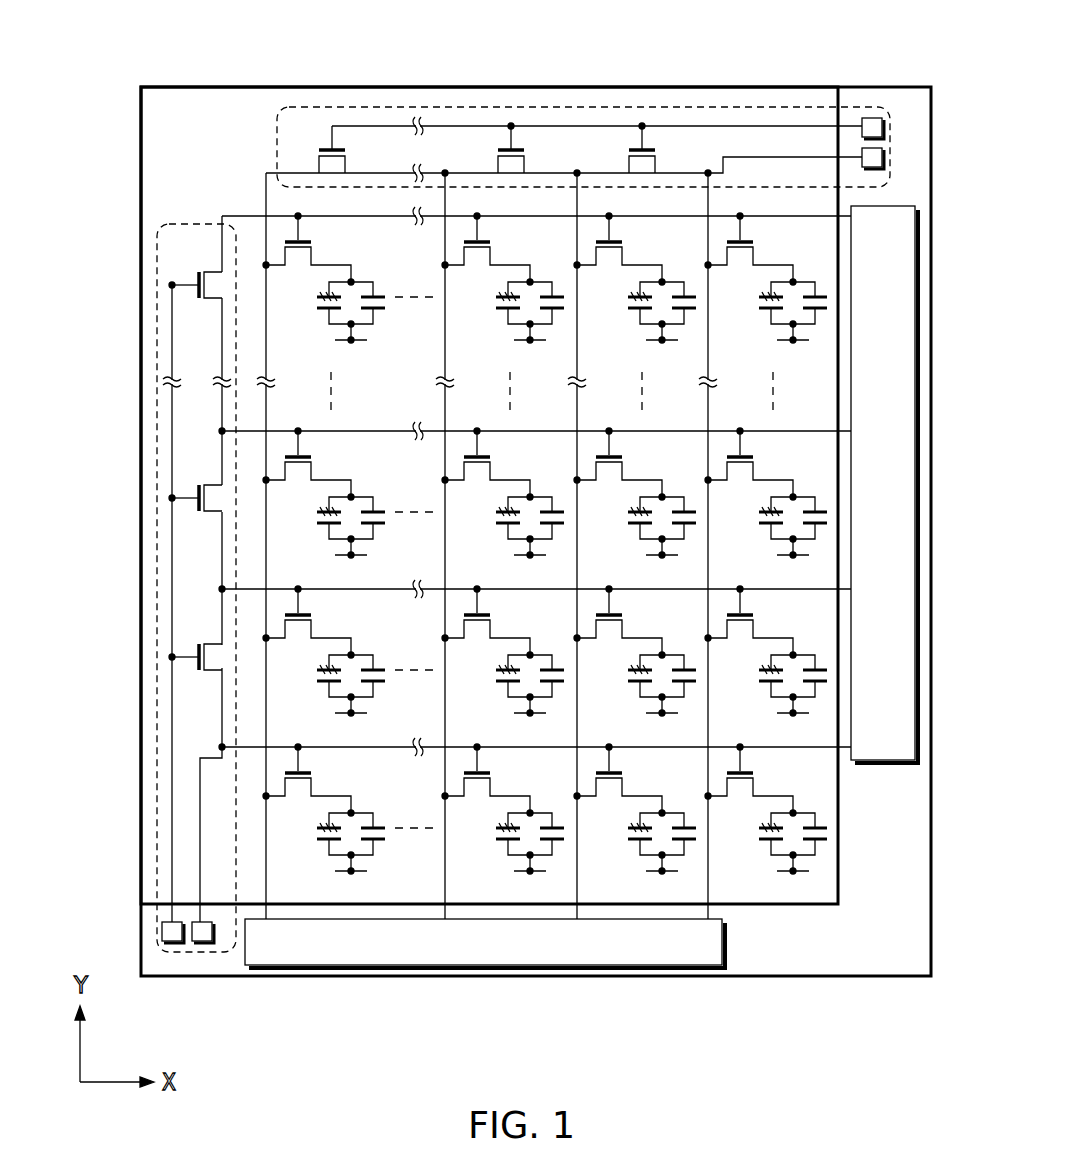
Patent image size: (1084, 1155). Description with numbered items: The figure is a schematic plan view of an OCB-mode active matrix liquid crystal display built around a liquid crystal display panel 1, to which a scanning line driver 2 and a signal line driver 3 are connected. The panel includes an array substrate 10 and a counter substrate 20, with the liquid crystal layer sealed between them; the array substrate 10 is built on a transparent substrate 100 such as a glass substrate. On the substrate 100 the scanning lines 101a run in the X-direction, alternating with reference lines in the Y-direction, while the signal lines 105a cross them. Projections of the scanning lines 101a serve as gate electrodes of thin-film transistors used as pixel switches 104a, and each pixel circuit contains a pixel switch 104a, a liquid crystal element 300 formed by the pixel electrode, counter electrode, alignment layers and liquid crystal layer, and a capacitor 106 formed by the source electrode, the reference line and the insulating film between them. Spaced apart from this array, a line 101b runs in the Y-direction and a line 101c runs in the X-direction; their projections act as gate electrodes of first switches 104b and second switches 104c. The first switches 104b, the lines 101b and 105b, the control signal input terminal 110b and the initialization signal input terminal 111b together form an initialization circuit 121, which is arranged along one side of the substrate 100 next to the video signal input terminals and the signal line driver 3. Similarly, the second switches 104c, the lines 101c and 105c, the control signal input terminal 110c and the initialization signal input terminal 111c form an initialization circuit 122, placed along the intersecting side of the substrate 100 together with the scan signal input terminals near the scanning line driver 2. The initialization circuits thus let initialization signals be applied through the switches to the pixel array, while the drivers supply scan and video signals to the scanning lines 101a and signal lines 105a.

The liquid crystal display panel 1 is at (766, 58).
The scanning line driver 2 is at (875, 765).
The signal line driver 3 is at (480, 968).
The array substrate 10 is at (748, 1000).
The counter substrate 20 is at (800, 905).
The transparent substrate 100 is at (630, 978).
The scanning lines 101a is at (373, 591).
The line 101b is at (172, 348).
The line 101c is at (466, 125).
The pixel switches 104a is at (622, 632).
The first switches 104b is at (208, 638).
The second switches 104c is at (621, 163).
The signal lines 105a is at (578, 310).
The line 105b is at (221, 552).
The line 105c is at (565, 177).
The capacitors 106 is at (688, 686).
The control signal input terminal 110b is at (166, 944).
The control signal input terminal 110c is at (870, 118).
The initialization signal input terminal 111b is at (201, 944).
The initialization signal input terminal 111c is at (884, 156).
The initialization circuit 121 is at (191, 223).
The initialization circuit 122 is at (328, 107).
The liquid crystal elements 300 is at (627, 688).